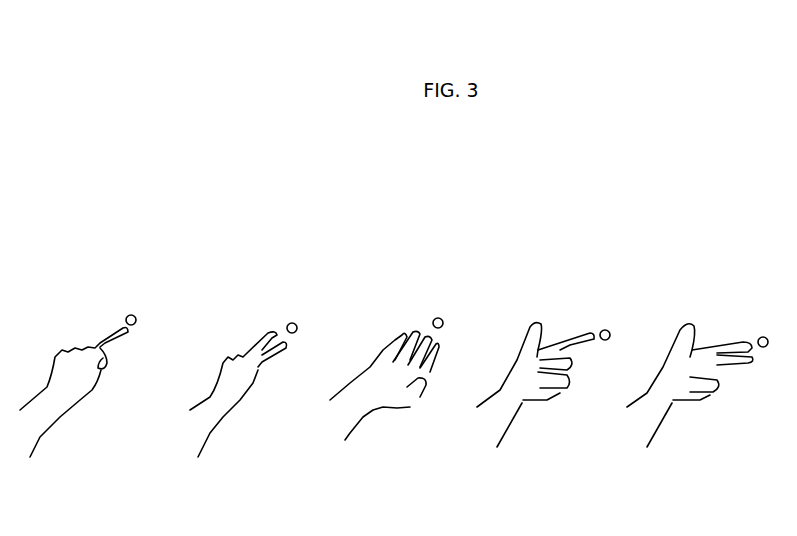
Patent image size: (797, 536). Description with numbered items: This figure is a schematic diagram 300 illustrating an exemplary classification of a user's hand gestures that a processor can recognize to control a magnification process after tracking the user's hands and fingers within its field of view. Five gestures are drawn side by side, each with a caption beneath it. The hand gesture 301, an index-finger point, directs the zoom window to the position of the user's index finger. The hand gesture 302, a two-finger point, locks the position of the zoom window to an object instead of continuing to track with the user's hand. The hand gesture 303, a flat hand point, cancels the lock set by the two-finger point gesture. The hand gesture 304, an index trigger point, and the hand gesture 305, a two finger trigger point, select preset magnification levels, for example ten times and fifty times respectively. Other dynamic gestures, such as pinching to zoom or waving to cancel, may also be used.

The gesture set diagram 300 is at (388, 259).
The hand gesture (index-finger point) 301 is at (97, 308).
The hand gesture (two-finger point) 302 is at (248, 308).
The hand gesture (flat hand point) 303 is at (402, 310).
The hand gesture (index trigger point) 304 is at (555, 305).
The hand gesture (two finger trigger point) 305 is at (712, 307).